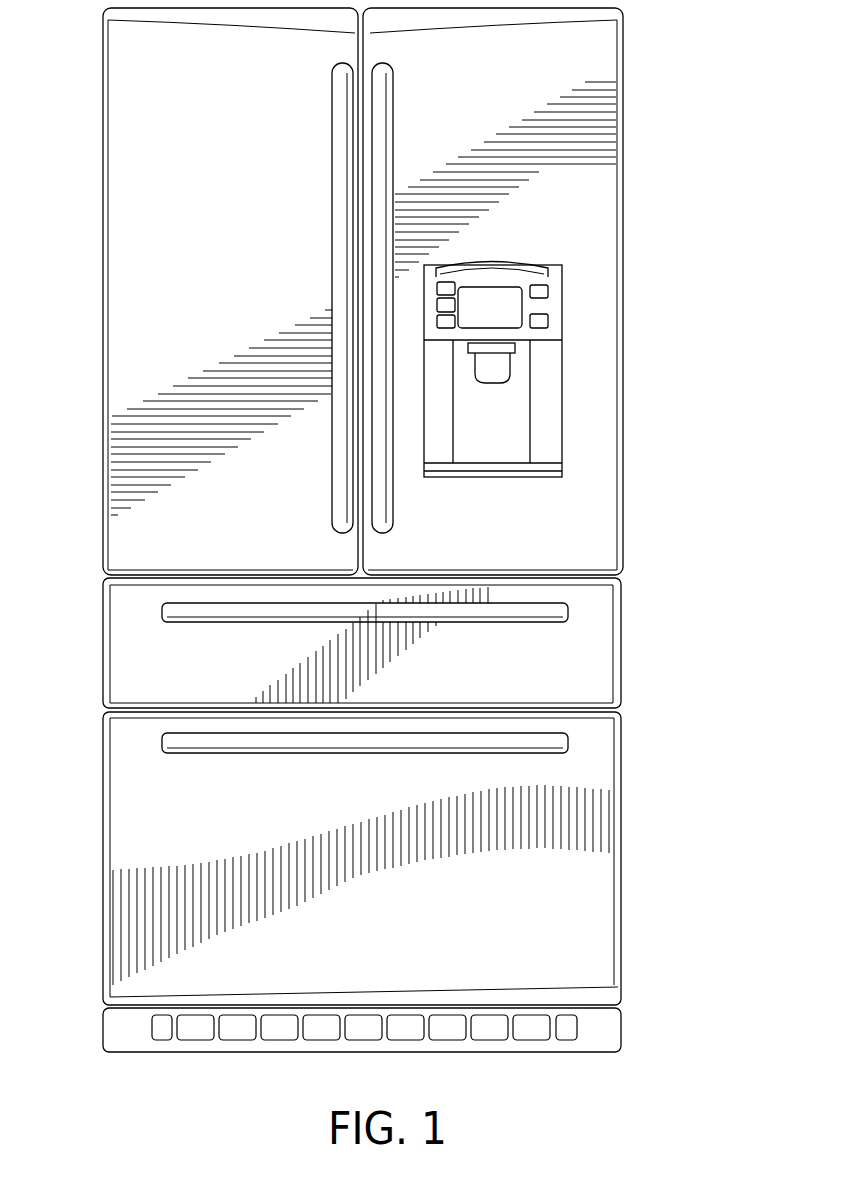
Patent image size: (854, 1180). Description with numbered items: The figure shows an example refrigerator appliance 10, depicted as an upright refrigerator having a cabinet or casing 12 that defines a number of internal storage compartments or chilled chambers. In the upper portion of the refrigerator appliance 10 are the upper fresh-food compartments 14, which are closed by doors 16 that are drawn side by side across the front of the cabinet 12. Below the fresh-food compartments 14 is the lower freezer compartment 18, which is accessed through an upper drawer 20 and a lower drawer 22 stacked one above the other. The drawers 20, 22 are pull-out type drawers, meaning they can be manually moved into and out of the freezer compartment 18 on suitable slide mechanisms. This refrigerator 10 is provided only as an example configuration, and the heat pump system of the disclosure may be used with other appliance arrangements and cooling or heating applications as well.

The refrigerator appliance 10 is at (393, 530).
The cabinet 12 is at (622, 490).
The upper fresh-food compartments 14 is at (138, 213).
The doors 16 is at (265, 491).
The lower freezer compartment 18 is at (401, 791).
The upper drawer 20 is at (208, 674).
The lower drawer 22 is at (467, 936).